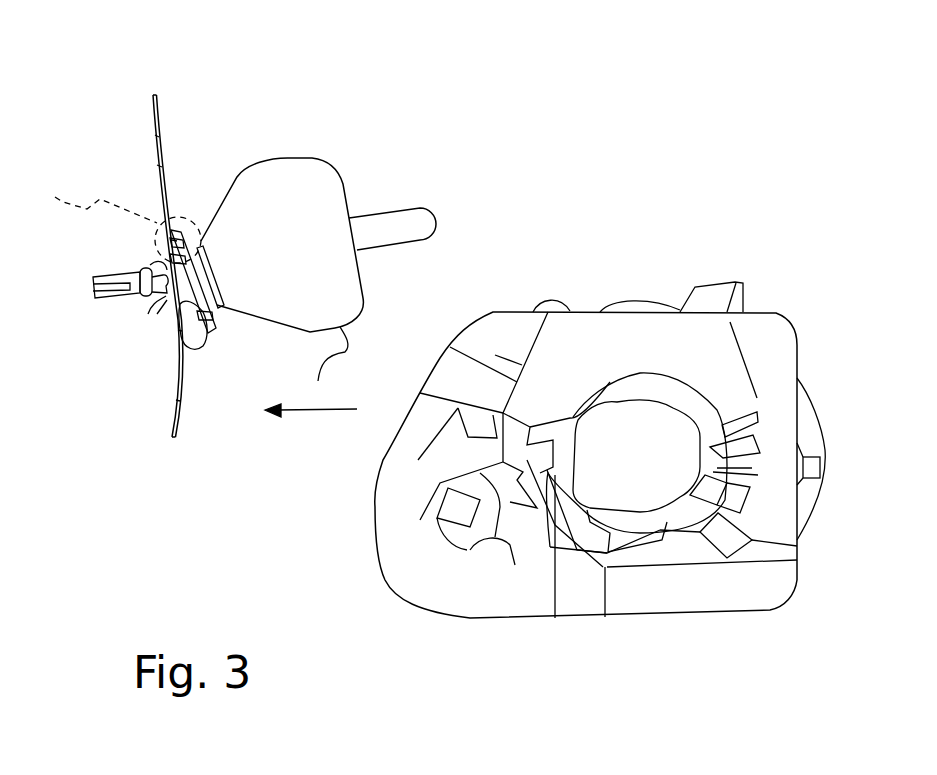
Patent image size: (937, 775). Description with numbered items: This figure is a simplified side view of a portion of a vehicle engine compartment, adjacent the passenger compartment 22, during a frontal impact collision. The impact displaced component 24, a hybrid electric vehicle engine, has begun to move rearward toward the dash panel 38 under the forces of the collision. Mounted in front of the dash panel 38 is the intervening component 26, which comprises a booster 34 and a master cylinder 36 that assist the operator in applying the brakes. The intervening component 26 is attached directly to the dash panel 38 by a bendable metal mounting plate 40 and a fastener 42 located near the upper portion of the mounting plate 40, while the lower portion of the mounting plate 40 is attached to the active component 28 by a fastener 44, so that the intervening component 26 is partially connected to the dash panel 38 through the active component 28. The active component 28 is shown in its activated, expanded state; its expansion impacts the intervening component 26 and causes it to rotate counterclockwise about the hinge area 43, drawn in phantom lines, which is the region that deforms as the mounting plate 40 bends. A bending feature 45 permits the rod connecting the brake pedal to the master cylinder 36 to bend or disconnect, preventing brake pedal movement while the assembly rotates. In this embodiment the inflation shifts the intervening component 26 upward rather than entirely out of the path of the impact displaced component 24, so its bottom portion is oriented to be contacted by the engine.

The passenger compartment 22 is at (105, 376).
The impact displaced component 24 is at (587, 333).
The intervening component 26 is at (392, 138).
The active component 28 is at (187, 337).
The booster 34 is at (288, 178).
The master cylinder 36 is at (412, 220).
The dash panel 38 is at (152, 104).
The mounting plate 40 is at (190, 246).
The fastener 42 is at (188, 226).
The hinge area 43 is at (116, 221).
The fastener 44 is at (214, 306).
The bending feature 45 is at (143, 305).